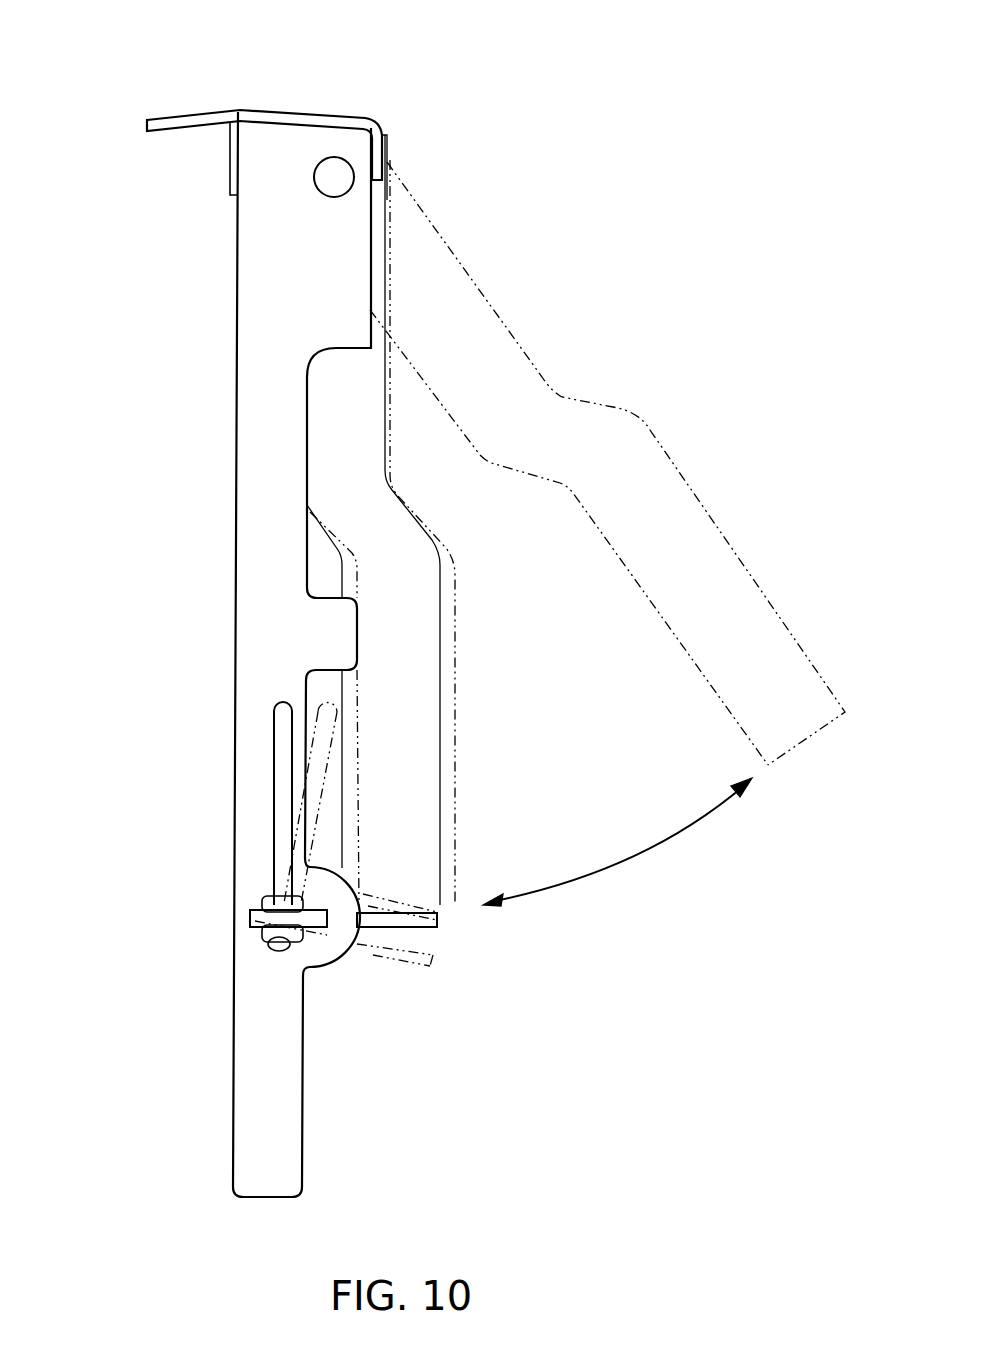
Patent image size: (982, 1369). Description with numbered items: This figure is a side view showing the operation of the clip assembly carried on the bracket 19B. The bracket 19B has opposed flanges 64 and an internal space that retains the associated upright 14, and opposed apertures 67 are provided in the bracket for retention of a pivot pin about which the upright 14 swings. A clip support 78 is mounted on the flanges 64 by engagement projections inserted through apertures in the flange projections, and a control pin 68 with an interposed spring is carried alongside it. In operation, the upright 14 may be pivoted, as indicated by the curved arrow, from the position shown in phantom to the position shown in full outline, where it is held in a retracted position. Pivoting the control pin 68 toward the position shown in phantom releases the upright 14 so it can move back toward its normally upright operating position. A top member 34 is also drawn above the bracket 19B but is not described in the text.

The bracket 19B is at (205, 273).
The flange 64 is at (262, 436).
The bracket 34 is at (188, 118).
The aperture 67 is at (338, 173).
The control pin 68 is at (283, 742).
The clip support 78 is at (440, 935).
The upright 14 is at (663, 468).